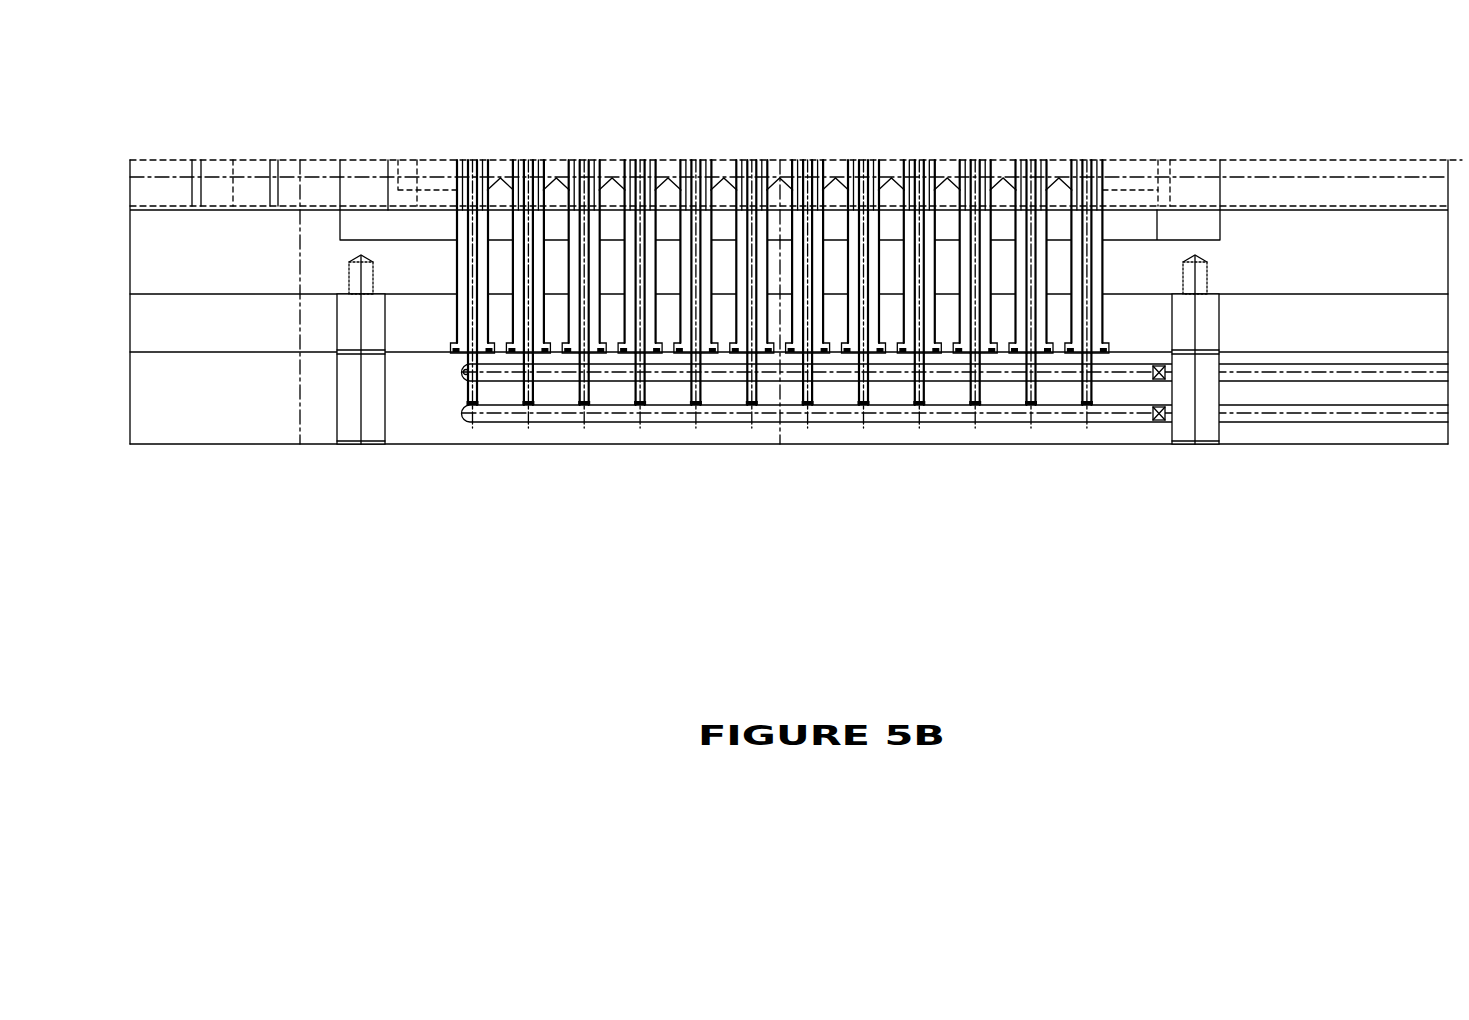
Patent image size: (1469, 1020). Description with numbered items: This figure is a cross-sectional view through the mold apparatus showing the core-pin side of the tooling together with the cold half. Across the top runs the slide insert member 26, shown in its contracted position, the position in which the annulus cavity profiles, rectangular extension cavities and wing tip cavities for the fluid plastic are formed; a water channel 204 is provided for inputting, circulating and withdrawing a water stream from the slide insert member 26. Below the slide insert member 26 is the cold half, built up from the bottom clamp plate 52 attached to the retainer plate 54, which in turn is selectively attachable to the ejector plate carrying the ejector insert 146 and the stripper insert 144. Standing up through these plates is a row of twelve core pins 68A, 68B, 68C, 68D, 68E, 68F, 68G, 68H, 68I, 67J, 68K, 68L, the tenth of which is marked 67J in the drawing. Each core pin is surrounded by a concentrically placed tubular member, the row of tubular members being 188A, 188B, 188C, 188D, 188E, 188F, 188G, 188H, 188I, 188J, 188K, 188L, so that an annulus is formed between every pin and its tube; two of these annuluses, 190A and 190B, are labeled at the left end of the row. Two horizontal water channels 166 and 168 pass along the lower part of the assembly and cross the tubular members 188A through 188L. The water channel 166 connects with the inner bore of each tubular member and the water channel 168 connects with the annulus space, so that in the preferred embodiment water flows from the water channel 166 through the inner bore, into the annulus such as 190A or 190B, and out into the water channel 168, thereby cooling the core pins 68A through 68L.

The slide insert member 26 is at (452, 190).
The water channel 204 is at (425, 165).
The annulus 190A is at (460, 238).
The annulus 190B is at (520, 216).
The core pin 68A is at (462, 260).
The core pin 68B is at (512, 258).
The core pin 68C is at (568, 248).
The core pin 68D is at (624, 265).
The core pin 68E is at (680, 255).
The core pin 68F is at (736, 250).
The core pin 68G is at (793, 258).
The core pin 68H is at (880, 258).
The core pin 68I is at (935, 258).
The pin 67J is at (991, 258).
The core pin 68K is at (1046, 258).
The core pin 68L is at (1103, 260).
The stripper insert 144 is at (352, 232).
The ejector insert 146 is at (323, 282).
The retainer plate 54 is at (415, 317).
The bottom clamp plate 52 is at (418, 423).
The water channel 166 is at (488, 419).
The water channel 168 is at (507, 380).
The tubular member 188A is at (468, 386).
The tubular member 188B is at (535, 390).
The tubular member 188C is at (592, 390).
The tubular member 188D is at (646, 390).
The tubular member 188E is at (702, 390).
The tubular member 188F is at (758, 390).
The tubular member 188G is at (814, 390).
The tubular member 188H is at (870, 390).
The tubular member 188I is at (926, 390).
The tubular member 188J is at (982, 390).
The tubular member 188K is at (1038, 390).
The tubular member 188L is at (1093, 390).